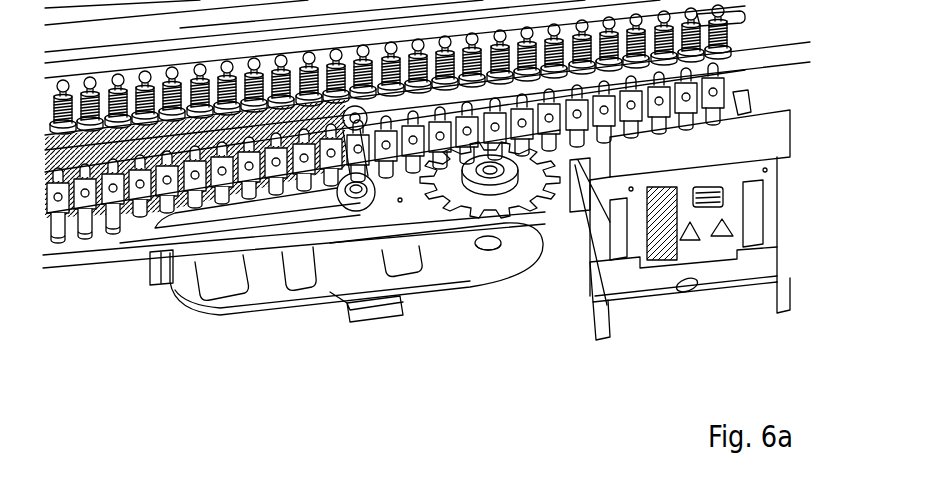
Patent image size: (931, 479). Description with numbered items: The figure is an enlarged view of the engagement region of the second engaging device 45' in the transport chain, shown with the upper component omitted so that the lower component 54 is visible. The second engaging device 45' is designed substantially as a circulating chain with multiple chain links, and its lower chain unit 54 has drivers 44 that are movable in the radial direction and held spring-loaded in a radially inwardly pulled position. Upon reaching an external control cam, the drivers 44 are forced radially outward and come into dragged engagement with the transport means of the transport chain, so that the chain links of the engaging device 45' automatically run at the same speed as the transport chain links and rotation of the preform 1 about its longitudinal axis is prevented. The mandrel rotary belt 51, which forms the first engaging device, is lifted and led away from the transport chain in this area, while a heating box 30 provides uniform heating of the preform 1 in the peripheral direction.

The preform 1 is at (92, 225).
The driver 44 is at (123, 193).
The mandrel rotary belt 51 is at (247, 178).
The lower component 54 is at (455, 263).
The heating box 30 is at (600, 250).
The second engaging device 45' is at (403, 384).